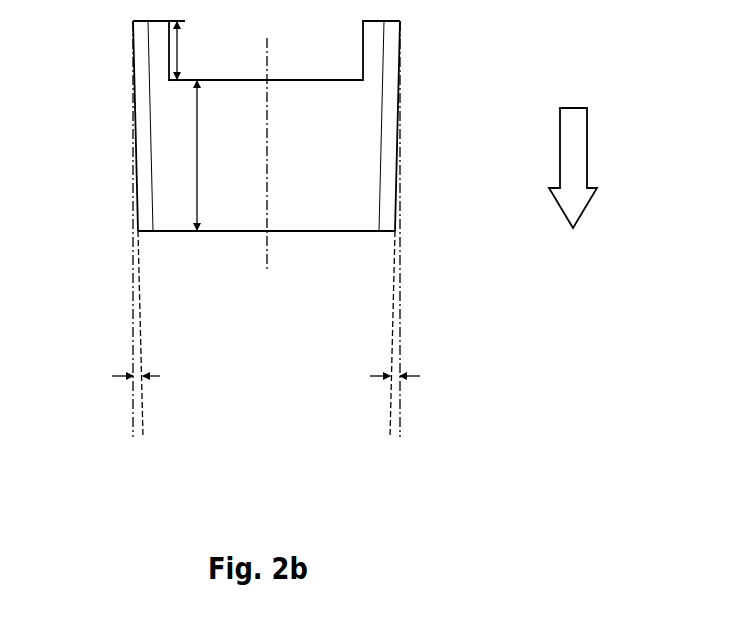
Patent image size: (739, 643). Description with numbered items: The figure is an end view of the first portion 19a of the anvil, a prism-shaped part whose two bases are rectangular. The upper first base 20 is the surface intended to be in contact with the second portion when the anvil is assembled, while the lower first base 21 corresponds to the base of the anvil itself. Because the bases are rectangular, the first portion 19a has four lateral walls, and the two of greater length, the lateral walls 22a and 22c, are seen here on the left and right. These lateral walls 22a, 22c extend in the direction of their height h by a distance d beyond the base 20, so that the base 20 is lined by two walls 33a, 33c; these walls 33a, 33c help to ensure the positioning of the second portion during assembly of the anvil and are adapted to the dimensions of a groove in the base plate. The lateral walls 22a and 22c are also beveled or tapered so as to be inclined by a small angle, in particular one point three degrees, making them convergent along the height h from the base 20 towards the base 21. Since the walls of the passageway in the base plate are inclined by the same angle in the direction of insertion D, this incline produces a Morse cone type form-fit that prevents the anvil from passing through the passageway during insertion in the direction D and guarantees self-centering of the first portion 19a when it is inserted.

The first portion 19a is at (450, 68).
The first base 20 is at (300, 79).
The first base 21 is at (347, 232).
The lateral wall 22a is at (133, 190).
The lateral wall 22c is at (398, 138).
The wall 33a is at (158, 62).
The wall 33c is at (377, 48).
The distance d is at (180, 53).
The height h is at (198, 157).
The direction of insertion D is at (588, 153).